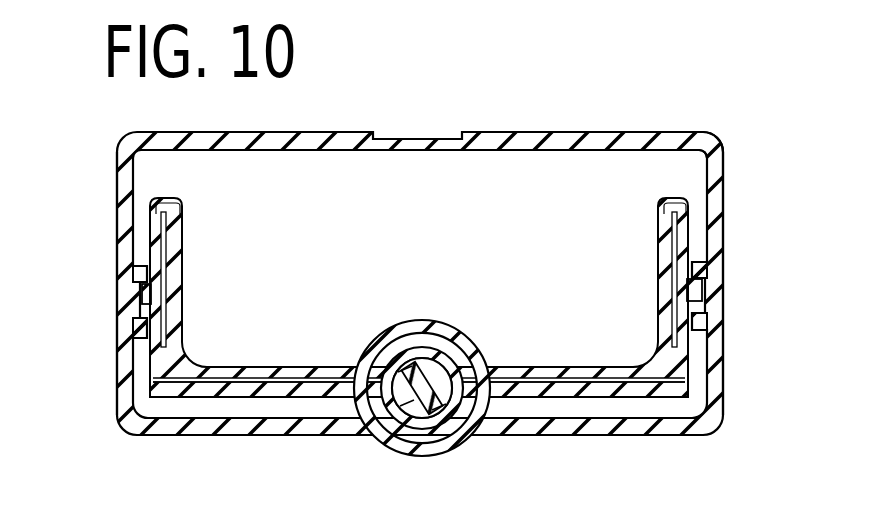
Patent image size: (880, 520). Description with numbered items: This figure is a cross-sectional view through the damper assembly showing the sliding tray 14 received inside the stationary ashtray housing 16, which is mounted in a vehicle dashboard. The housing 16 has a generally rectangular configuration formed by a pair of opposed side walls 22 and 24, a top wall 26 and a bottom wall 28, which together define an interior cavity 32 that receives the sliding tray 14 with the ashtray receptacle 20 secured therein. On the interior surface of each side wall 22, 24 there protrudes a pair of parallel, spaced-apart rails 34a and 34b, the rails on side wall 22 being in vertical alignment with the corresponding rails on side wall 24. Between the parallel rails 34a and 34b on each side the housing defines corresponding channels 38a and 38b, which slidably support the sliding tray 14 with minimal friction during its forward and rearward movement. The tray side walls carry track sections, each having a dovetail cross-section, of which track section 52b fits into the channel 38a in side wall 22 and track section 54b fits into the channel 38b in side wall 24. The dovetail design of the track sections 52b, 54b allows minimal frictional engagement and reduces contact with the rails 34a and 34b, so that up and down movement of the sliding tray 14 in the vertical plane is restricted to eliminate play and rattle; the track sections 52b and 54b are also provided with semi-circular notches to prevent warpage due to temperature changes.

The sliding tray 14 is at (622, 402).
The stationary ashtray housing 16 is at (690, 440).
The ashtray receptacle 20 is at (647, 264).
The side wall 22 is at (724, 224).
The side wall 24 is at (118, 238).
The top wall 26 is at (548, 132).
The bottom wall 28 is at (527, 437).
The interior cavity 32 is at (690, 186).
The rail 34a is at (146, 272).
The rail 34b is at (137, 327).
The channel 38a is at (700, 300).
The channel 38b is at (140, 302).
The track section 52b is at (690, 298).
The track section 54b is at (176, 303).